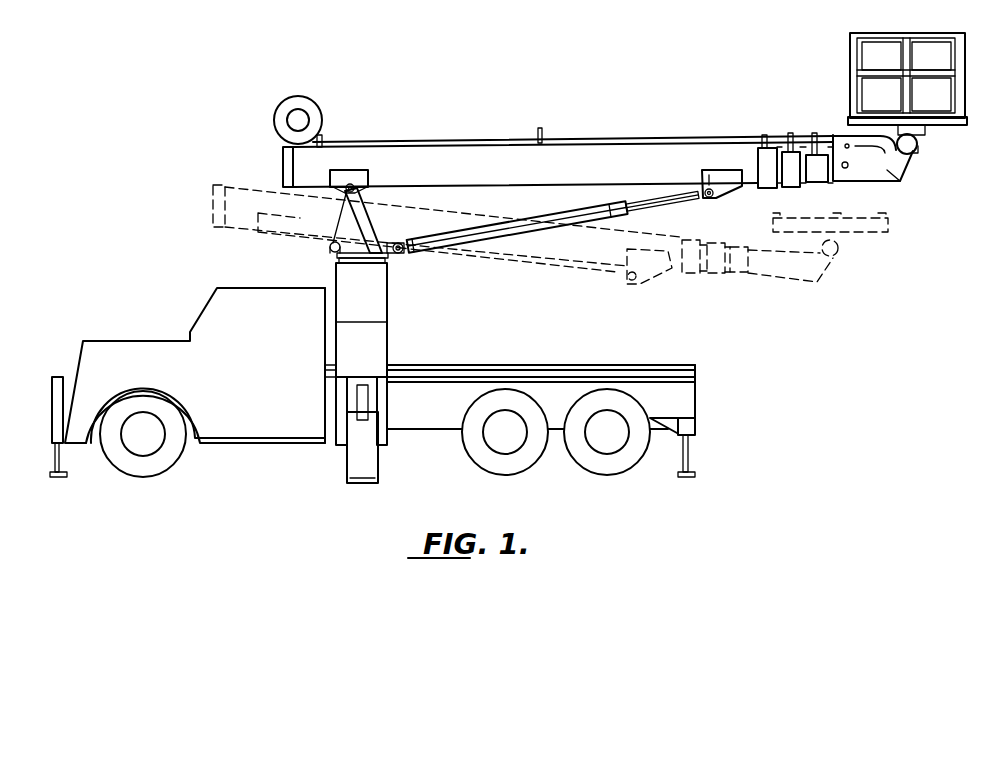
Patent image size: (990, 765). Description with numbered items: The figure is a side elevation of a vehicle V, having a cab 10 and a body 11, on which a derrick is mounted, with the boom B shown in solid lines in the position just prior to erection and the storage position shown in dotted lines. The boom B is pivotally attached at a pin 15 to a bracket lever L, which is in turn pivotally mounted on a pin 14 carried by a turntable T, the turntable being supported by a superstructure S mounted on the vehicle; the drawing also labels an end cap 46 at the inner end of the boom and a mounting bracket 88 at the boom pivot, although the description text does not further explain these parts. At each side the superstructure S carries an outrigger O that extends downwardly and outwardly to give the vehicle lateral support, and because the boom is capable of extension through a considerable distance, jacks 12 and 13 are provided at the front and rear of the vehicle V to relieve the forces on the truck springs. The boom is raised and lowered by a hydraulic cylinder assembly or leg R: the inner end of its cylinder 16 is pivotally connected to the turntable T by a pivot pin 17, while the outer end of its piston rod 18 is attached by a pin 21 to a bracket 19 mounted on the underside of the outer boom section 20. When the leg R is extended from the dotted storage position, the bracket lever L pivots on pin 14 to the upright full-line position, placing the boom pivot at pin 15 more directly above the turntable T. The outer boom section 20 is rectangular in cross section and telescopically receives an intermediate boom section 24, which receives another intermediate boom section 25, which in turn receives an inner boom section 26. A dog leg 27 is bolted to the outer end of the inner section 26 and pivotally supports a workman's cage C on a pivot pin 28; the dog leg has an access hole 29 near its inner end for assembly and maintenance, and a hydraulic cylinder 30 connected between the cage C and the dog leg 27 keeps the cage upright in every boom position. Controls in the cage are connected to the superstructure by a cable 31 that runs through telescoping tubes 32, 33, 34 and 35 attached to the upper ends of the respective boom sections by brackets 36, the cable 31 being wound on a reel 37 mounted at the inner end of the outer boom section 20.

The cab 10 is at (203, 308).
The body 11 is at (696, 402).
The front jack 12 is at (66, 468).
The rear jack 13 is at (689, 463).
The pin 14 is at (332, 252).
The pin 15 is at (357, 190).
The cylinder 16 is at (613, 218).
The pivot pin 17 is at (400, 243).
The piston rod 18 is at (647, 207).
The bracket 19 is at (726, 188).
The outer boom section 20 is at (580, 179).
The pin 21 is at (709, 198).
The intermediate boom section 24 is at (792, 178).
The intermediate boom section 25 is at (817, 180).
The inner boom section 26 is at (834, 172).
The dog leg 27 is at (893, 172).
The pivot pin 28 is at (909, 147).
The access hole 29 is at (848, 165).
The hydraulic cylinder 30 is at (857, 137).
The cable 31 is at (895, 134).
The telescoping tube 32 is at (670, 122).
The telescoping tube 33 is at (770, 135).
The telescoping tube 34 is at (797, 135).
The telescoping tube 35 is at (818, 135).
The bracket 36 is at (322, 137).
The reel 37 is at (310, 100).
The boom end cap 46 is at (283, 175).
The boom mounting bracket 88 is at (367, 162).
The boom B is at (423, 160).
The workman's cage C is at (848, 47).
The bracket lever L is at (338, 233).
The outrigger O is at (346, 472).
The hydraulic cylinder assembly or leg R is at (551, 197).
The superstructure S is at (388, 347).
The turntable T is at (391, 260).
The vehicle V is at (556, 362).